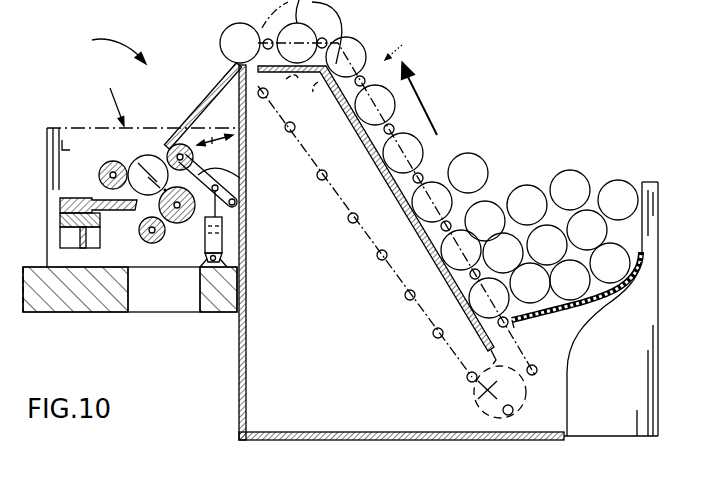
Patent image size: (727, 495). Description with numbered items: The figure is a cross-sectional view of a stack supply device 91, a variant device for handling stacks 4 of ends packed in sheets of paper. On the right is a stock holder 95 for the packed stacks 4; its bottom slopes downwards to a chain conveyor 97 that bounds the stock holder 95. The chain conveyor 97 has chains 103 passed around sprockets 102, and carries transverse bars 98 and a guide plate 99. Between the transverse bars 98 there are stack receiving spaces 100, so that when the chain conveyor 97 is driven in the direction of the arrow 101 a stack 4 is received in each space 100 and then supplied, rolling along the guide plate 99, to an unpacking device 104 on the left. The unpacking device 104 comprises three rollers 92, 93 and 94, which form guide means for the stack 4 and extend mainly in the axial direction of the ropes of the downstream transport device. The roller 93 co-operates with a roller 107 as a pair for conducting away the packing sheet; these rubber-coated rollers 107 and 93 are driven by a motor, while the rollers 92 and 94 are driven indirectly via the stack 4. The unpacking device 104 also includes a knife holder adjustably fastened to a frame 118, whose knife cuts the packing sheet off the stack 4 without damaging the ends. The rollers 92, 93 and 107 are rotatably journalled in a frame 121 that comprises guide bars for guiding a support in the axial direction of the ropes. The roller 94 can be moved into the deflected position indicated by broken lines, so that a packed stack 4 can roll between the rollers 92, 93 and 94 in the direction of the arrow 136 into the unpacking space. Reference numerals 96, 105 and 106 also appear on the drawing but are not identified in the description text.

The stack 4 is at (140, 153).
The stack supply device 91 is at (107, 51).
The roller 92 is at (118, 161).
The roller 93 is at (177, 223).
The roller 94 is at (200, 130).
The stock holder 95 is at (620, 228).
The bottom guide plate 96 is at (592, 318).
The chain conveyor 97 is at (405, 45).
The transverse bars 98 is at (445, 225).
The guide plate 99 is at (448, 290).
The stack receiving spaces 100 is at (410, 185).
The arrow 101 is at (431, 110).
The sprockets 102 is at (298, 78).
The chains 103 is at (436, 334).
The unpacking device 104 is at (111, 97).
The pivot arm 105 is at (238, 178).
The cylinder 106 is at (248, 228).
The roller 107 is at (155, 244).
The frame 118 is at (60, 221).
The frame 121 is at (80, 127).
The arrow 136 is at (150, 143).